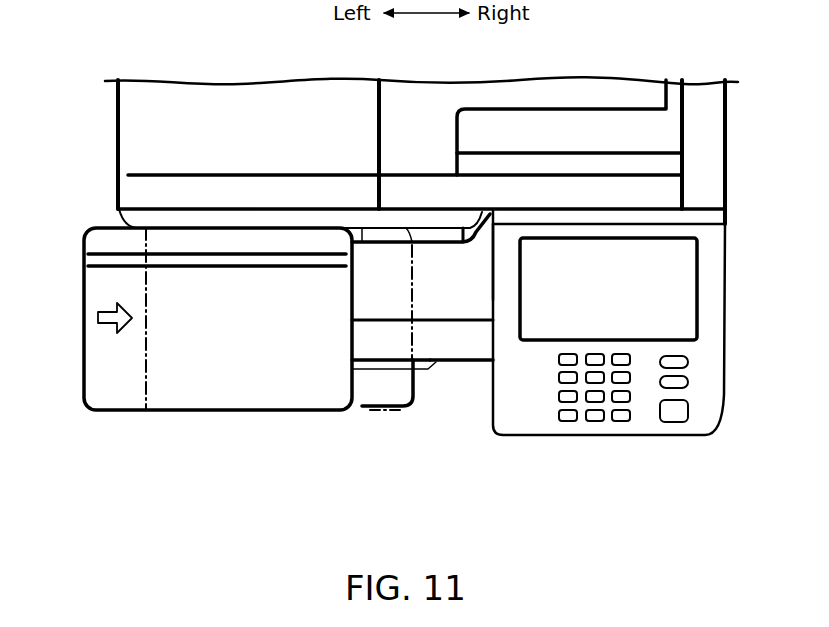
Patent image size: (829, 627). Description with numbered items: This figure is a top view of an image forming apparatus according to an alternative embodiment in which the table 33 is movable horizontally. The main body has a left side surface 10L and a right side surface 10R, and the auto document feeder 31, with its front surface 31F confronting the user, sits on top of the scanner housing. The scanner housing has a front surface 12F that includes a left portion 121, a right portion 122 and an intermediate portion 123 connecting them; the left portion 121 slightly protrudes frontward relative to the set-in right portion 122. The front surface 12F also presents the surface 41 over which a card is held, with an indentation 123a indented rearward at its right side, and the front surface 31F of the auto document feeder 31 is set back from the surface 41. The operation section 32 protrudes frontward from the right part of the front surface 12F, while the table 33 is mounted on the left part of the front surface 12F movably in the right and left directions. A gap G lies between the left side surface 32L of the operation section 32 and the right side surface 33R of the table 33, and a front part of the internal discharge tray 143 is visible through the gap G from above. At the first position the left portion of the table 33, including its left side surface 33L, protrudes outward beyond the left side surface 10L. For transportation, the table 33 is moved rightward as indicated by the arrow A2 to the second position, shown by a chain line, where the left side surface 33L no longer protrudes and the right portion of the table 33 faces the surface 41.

The left side surface 10L is at (118, 125).
The right side surface 10R is at (727, 146).
The auto document feeder 31 is at (164, 156).
The front surface 31F is at (327, 208).
The left portion 121 is at (235, 228).
The right portion 122 is at (575, 207).
The intermediate portion 123 is at (470, 207).
The indentation 123a is at (508, 234).
The surface over which a card is held 41 is at (430, 237).
The front surface 12F is at (727, 217).
The internal discharge tray 143 is at (478, 280).
The operation section 32 is at (621, 436).
The left side surface 32L is at (483, 331).
The table 33 is at (243, 412).
The left side surface 33L is at (146, 386).
The right side surface 33R is at (355, 378).
The arrow A2 is at (105, 328).
The gap G is at (471, 414).